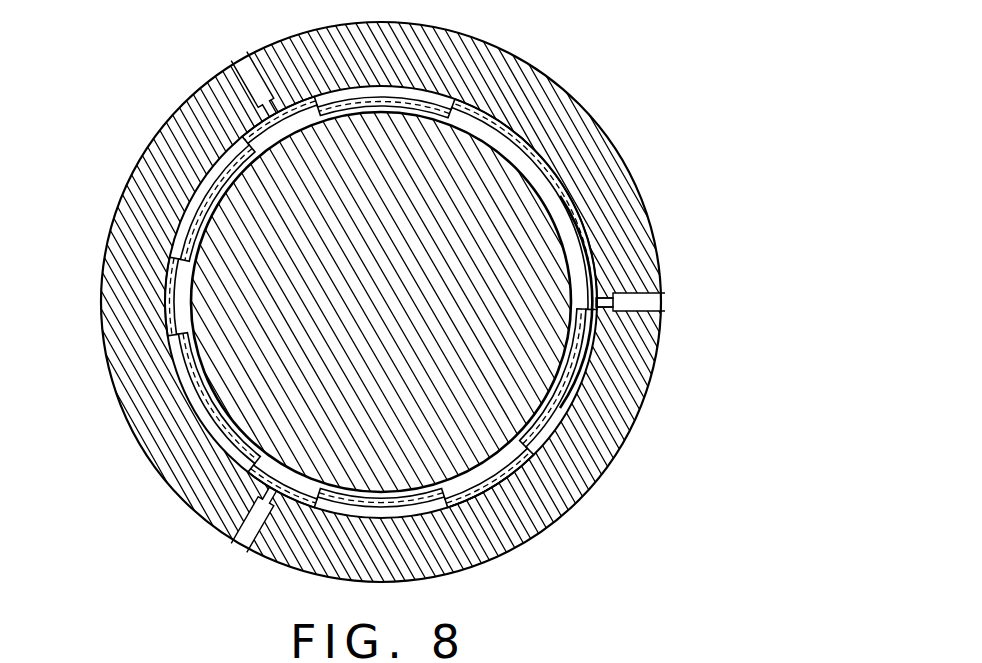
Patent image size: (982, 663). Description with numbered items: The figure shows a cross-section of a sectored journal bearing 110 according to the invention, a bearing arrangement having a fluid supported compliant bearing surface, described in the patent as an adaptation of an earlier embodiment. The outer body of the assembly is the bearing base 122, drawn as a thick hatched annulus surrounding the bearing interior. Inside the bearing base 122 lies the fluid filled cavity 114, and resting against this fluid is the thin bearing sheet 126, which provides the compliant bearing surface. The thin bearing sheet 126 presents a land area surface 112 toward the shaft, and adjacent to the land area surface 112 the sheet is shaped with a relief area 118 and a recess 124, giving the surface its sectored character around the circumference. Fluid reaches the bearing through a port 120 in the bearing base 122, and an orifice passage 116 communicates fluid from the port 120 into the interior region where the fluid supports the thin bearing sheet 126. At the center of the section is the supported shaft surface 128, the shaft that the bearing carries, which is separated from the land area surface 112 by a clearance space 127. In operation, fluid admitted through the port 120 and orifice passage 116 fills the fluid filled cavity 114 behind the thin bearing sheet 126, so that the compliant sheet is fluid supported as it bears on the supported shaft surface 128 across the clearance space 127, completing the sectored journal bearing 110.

The sectored journal bearing 110 is at (427, 292).
The land area surface 112 is at (570, 200).
The fluid filled cavity 114 is at (587, 240).
The orifice passage 116 is at (598, 296).
The relief area 118 is at (490, 267).
The port 120 is at (650, 303).
The bearing base 122 is at (427, 292).
The recess 124 is at (590, 332).
The thin bearing sheet 126 is at (538, 168).
The clearance space 127 is at (567, 410).
The supported shaft surface 128 is at (268, 471).